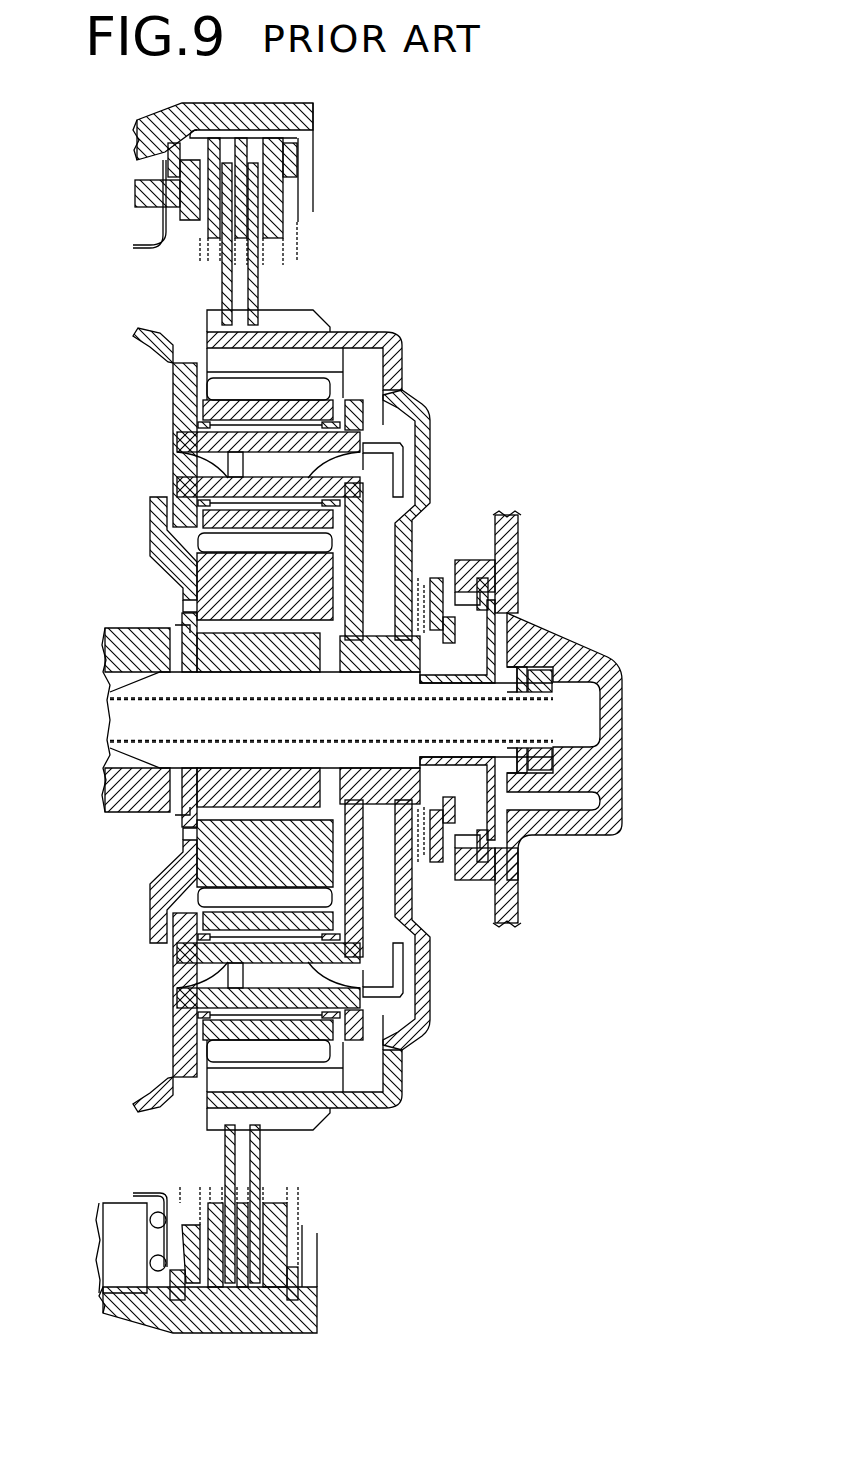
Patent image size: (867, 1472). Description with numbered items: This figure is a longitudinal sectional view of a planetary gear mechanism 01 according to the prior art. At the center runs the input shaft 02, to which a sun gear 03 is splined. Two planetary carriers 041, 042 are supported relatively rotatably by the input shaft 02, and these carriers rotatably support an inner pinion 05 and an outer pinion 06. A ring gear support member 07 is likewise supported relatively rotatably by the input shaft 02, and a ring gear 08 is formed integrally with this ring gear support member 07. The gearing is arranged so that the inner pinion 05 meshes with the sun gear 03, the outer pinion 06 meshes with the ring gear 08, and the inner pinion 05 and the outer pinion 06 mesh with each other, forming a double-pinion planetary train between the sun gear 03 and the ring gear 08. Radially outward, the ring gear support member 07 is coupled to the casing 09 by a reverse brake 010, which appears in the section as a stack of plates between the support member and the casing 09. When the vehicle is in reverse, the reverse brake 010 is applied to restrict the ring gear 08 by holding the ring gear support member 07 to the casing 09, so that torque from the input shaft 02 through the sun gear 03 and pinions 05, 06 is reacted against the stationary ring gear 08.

The planetary gear mechanism 01 is at (432, 358).
The input shaft 02 is at (118, 632).
The sun gear 03 is at (210, 900).
The planetary carrier 041 is at (363, 527).
The planetary carrier 042 is at (177, 393).
The inner pinion 05 is at (318, 392).
The outer pinion 06 is at (310, 927).
The ring gear support member 07 is at (420, 440).
The ring gear 08 is at (302, 355).
The casing 09 is at (300, 110).
The reverse brake 010 is at (312, 268).